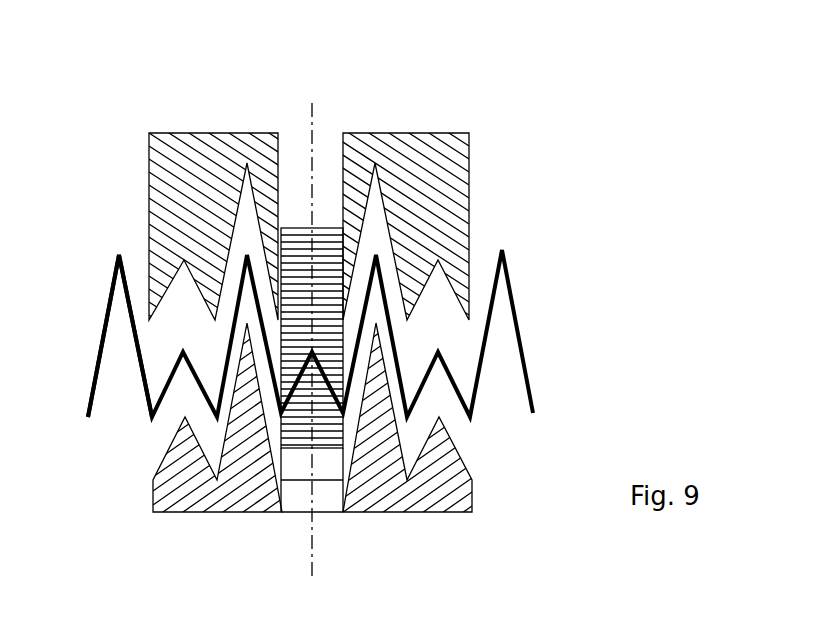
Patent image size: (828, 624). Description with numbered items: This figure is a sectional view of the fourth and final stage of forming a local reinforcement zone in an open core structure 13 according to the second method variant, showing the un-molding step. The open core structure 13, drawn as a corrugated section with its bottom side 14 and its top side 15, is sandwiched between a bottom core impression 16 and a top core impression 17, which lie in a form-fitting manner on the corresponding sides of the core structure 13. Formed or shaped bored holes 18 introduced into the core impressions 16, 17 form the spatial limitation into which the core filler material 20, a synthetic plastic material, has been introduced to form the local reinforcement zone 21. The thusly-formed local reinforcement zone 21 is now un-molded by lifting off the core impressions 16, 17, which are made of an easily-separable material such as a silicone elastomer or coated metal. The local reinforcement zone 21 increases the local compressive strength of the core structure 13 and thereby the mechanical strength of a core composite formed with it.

The open core structure 13 is at (525, 357).
The bottom side 14 is at (103, 402).
The top side 15 is at (134, 265).
The bottom core impression 16 is at (455, 497).
The top core impression 17 is at (443, 162).
The bored hole 18 is at (299, 502).
The core filler material 20 is at (298, 233).
The local reinforcement zone 21 is at (328, 170).